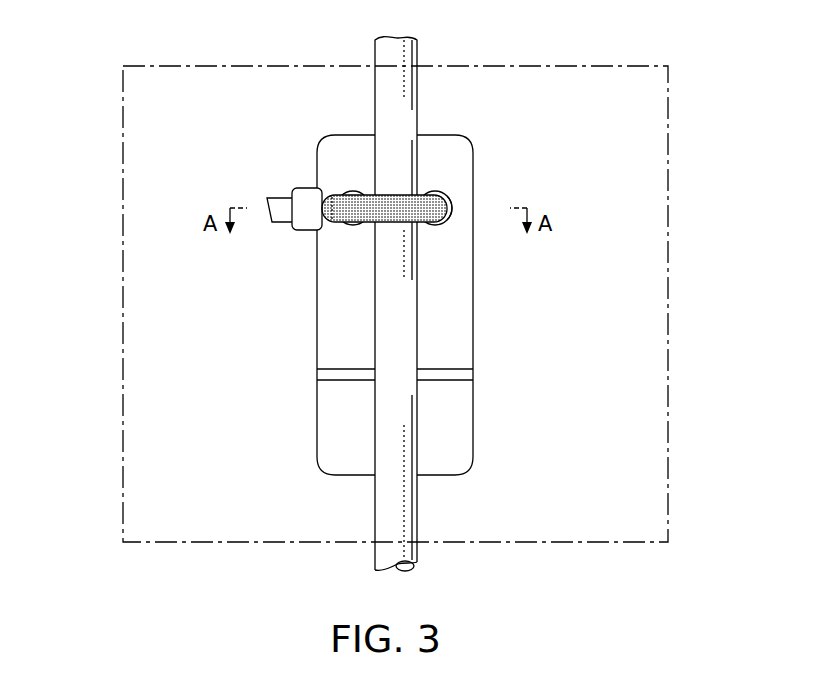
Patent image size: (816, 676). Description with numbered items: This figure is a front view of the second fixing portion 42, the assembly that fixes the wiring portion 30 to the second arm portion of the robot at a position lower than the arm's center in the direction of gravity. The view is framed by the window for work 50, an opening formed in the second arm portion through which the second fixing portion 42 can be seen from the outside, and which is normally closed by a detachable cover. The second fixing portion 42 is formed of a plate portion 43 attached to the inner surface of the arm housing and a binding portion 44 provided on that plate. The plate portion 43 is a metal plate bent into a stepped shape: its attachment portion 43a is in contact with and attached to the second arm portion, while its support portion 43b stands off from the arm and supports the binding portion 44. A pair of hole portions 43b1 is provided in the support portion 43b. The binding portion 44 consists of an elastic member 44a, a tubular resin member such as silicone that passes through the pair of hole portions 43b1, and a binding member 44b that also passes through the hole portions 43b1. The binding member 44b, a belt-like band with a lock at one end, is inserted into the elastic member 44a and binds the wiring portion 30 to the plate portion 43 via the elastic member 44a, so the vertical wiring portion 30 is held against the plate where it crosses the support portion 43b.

The wiring portion 30 is at (374, 105).
The second fixing portion 42 is at (463, 123).
The plate portion 43 is at (385, 292).
The attachment portion 43a is at (312, 428).
The support portion 43b is at (312, 310).
The hole portions 43b1 is at (349, 190).
The binding portion 44 is at (372, 199).
The elastic member 44a is at (394, 224).
The binding member 44b is at (296, 195).
The window for work 50 is at (123, 125).